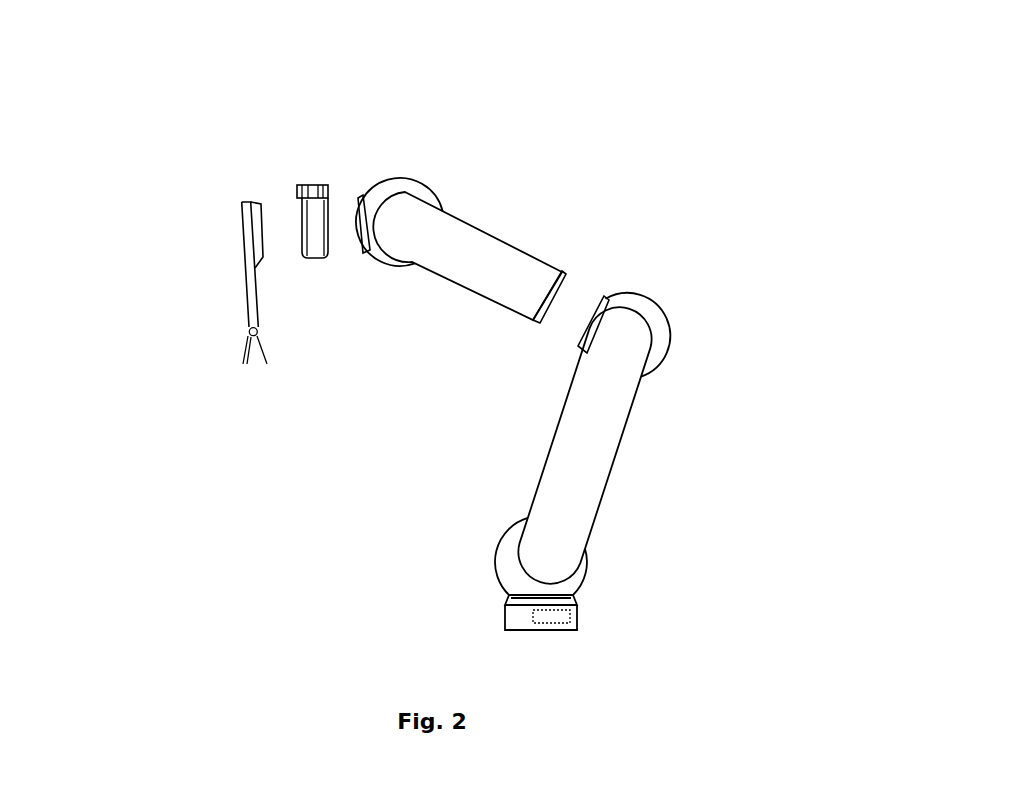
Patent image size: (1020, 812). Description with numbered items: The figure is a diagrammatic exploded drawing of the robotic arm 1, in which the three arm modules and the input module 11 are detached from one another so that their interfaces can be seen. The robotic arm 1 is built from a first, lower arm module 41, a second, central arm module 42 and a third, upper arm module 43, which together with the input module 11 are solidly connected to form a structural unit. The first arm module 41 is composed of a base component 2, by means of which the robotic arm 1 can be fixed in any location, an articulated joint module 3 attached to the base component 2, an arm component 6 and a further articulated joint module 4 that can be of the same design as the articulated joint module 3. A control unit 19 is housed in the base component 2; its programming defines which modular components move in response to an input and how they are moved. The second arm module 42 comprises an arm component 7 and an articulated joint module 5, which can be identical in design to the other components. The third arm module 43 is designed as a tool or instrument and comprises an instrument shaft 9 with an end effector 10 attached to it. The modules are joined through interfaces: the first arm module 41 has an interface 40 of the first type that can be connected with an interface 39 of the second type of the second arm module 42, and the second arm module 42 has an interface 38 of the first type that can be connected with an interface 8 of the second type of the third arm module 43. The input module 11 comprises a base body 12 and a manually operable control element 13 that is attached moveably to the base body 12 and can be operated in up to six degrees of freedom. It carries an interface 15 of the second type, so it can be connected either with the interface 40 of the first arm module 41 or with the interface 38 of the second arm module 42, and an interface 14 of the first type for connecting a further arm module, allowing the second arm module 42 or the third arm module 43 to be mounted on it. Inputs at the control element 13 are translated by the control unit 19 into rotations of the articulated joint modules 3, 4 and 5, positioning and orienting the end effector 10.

The robotic arm 1 is at (521, 127).
The base component 2 is at (520, 615).
The articulated joint module 3 is at (578, 563).
The articulated joint module 4 is at (663, 323).
The articulated joint module 5 is at (428, 193).
The arm component 6 is at (590, 443).
The arm component 7 is at (470, 243).
The interface of the second type 8 is at (258, 228).
The instrument shaft 9 is at (250, 295).
The end effector 10 is at (242, 352).
The input module 11 is at (290, 195).
The base body 12 is at (318, 214).
The control element 13 is at (308, 186).
The interface of the first type 14 is at (303, 232).
The interface of the second type 15 is at (326, 215).
The control unit 19 is at (560, 617).
The interface of the first type 38 is at (366, 200).
The interface of the second type 39 is at (556, 291).
The interface of the first type 40 is at (593, 302).
The first arm module 41 is at (482, 473).
The second arm module 42 is at (547, 201).
The third arm module 43 is at (196, 249).